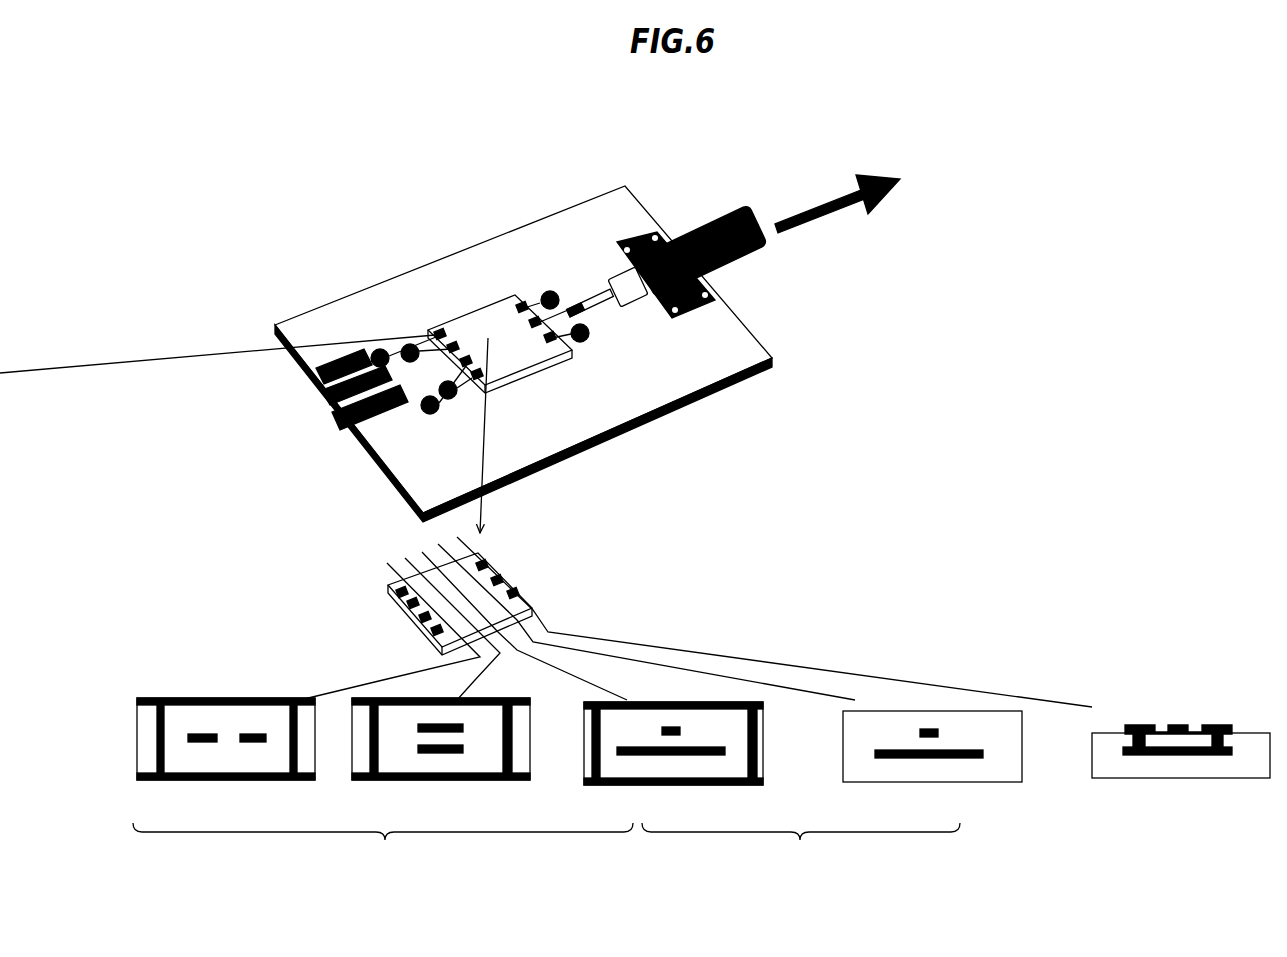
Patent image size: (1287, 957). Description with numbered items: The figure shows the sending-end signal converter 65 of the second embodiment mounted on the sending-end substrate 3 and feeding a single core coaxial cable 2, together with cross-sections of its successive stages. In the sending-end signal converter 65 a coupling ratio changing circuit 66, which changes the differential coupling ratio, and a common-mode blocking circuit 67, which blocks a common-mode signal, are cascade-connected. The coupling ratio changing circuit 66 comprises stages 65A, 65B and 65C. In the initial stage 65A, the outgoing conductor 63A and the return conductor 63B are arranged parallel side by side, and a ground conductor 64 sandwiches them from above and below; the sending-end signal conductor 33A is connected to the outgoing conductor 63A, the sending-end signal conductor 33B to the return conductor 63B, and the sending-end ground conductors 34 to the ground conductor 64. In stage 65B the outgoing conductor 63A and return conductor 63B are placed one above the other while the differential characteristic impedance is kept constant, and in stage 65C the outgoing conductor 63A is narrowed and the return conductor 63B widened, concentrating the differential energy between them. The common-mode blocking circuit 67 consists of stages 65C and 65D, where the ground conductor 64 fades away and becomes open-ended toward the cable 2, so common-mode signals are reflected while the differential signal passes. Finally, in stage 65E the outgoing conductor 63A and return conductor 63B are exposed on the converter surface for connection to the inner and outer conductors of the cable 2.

The single core coaxial cable 2 is at (777, 274).
The sending-end substrate 3 is at (779, 386).
The sending-end signal conductor 33A is at (363, 410).
The sending-end signal conductor 33B is at (372, 437).
The sending-end ground conductor 34 is at (363, 448).
The sending-end signal converter 65 is at (520, 358).
The outgoing conductor 63A is at (200, 733).
The return conductor 63B is at (250, 733).
The ground conductor 64 is at (283, 698).
The initial stage of the coupling ratio changing circuit 65A is at (226, 761).
The second stage of the coupling ratio changing circuit 65B is at (441, 761).
The third stage of the signal converter 65C is at (673, 762).
The fourth stage of the signal converter 65D is at (932, 767).
The final stage of the signal converter 65E is at (1181, 773).
The coupling ratio changing circuit 66 is at (383, 859).
The common-mode blocking circuit 67 is at (801, 859).